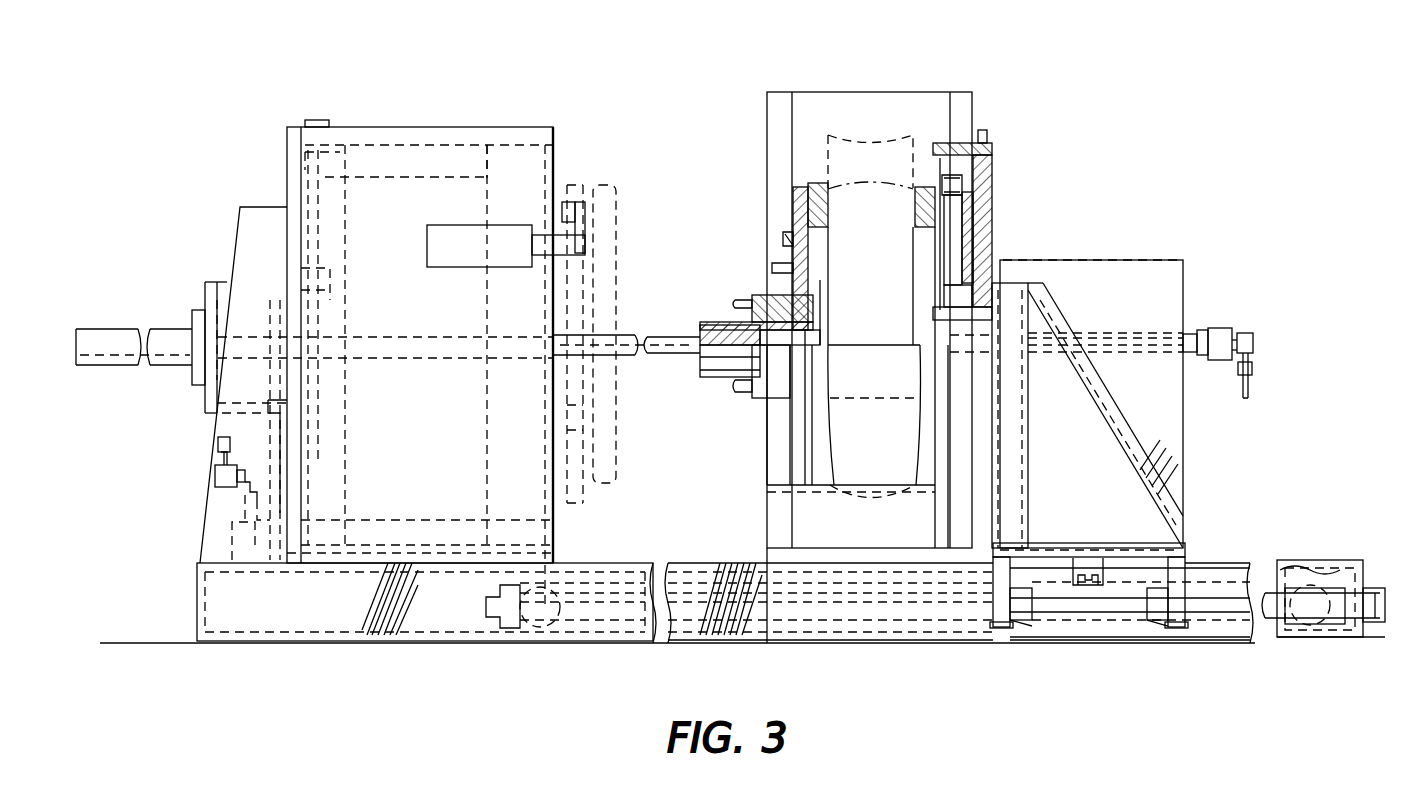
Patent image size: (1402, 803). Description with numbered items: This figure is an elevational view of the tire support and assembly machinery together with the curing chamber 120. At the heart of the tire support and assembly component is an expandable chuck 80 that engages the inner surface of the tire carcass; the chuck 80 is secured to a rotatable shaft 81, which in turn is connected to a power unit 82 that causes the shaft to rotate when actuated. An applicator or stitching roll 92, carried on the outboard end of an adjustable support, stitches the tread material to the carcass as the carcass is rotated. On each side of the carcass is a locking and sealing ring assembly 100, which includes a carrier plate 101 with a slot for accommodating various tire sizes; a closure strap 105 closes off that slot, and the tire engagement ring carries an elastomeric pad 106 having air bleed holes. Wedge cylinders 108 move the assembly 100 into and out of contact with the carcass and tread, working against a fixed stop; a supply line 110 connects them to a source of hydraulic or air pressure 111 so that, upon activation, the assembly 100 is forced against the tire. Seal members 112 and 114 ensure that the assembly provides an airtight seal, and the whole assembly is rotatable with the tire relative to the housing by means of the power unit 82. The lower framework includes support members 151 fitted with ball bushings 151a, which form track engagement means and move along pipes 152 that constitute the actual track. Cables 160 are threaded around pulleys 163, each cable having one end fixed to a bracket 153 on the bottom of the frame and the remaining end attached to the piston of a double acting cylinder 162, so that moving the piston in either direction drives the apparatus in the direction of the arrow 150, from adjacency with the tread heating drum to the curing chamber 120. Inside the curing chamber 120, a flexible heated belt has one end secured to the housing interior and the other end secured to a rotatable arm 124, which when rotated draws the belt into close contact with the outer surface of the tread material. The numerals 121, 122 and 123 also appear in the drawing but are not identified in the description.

The curing chamber 120 is at (515, 118).
The motor 121 is at (450, 205).
The control unit 123 is at (330, 270).
The rotatable arm 124 is at (487, 167).
The pulleys 163 is at (538, 622).
The locking and sealing ring assembly 100 is at (807, 170).
The applicator or stitching roll 92 is at (870, 150).
The expandable chuck 80 is at (882, 388).
The carrier plate 101 is at (932, 285).
The elastomeric pad 106 is at (915, 205).
The closure strap 105 is at (963, 235).
The wedge cylinders 108 is at (975, 255).
The seal member 114 is at (950, 285).
The seal member 112 is at (783, 240).
The pin 122 is at (772, 268).
The power unit 82 is at (1125, 272).
The rotatable shaft 81 is at (985, 323).
The supply line 110 is at (1150, 345).
The source of hydraulic or air pressure 111 is at (1222, 333).
The arrow 150 is at (1178, 737).
The support members 151 is at (1000, 628).
The ball bushings 151a is at (1022, 628).
The bracket 153 is at (1102, 590).
The cables 160 is at (948, 592).
The double acting cylinder 162 is at (1255, 628).
The pipes 152 is at (1292, 625).